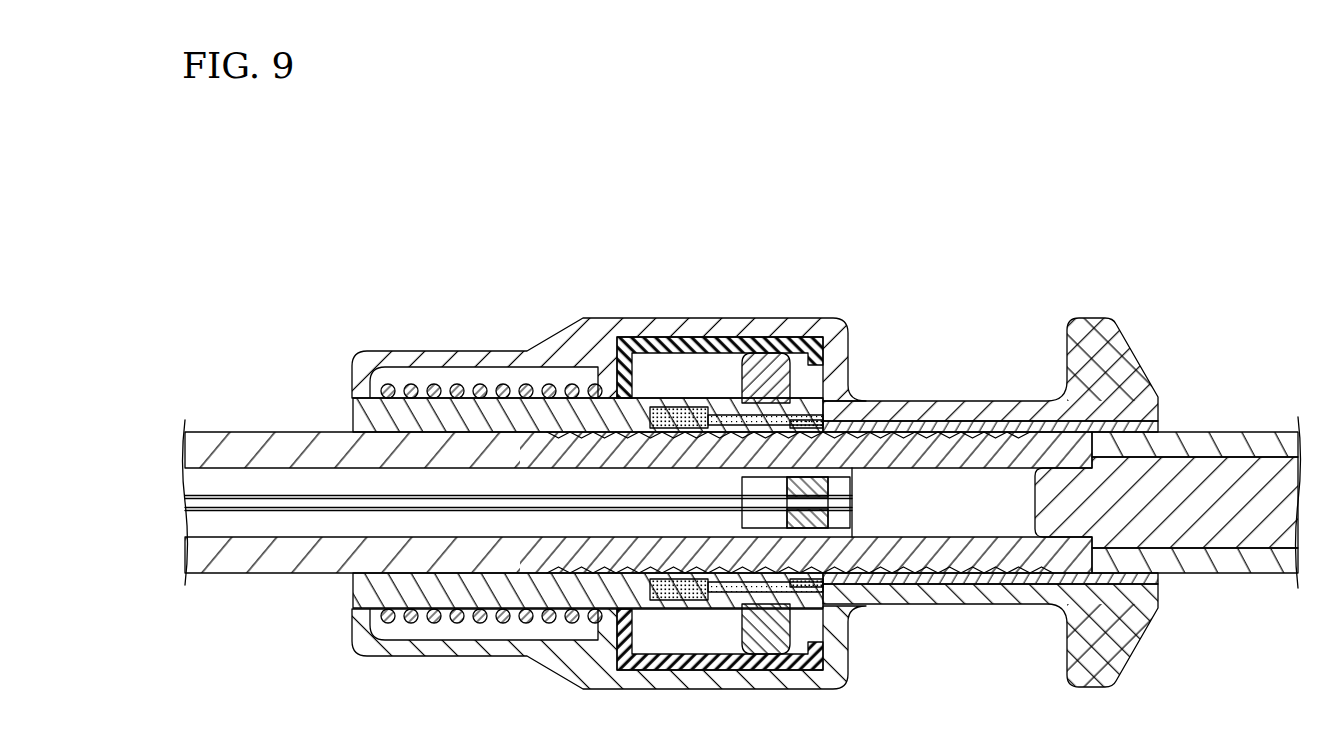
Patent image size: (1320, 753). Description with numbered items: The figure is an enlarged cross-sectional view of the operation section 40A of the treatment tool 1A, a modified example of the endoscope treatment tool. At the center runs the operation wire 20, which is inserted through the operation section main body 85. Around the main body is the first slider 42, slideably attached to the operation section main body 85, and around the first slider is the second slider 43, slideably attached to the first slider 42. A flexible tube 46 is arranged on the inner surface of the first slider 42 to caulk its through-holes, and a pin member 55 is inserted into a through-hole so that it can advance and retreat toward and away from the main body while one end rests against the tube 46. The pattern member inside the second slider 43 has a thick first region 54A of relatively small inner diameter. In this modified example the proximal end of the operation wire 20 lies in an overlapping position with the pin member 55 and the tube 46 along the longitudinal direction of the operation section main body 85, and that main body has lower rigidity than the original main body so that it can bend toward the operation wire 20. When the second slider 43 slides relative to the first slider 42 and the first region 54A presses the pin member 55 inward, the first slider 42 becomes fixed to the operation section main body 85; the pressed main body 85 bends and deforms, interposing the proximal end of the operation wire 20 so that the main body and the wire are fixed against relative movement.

The treatment tool 1A is at (826, 430).
The operation wire 20 is at (257, 497).
The operation section 40A is at (800, 272).
The first slider 42 is at (1003, 578).
The second slider 43 is at (953, 404).
The tube 46 is at (797, 408).
The first region 54A is at (677, 350).
The pin member 55 is at (762, 652).
The operation section main body 85 is at (945, 562).